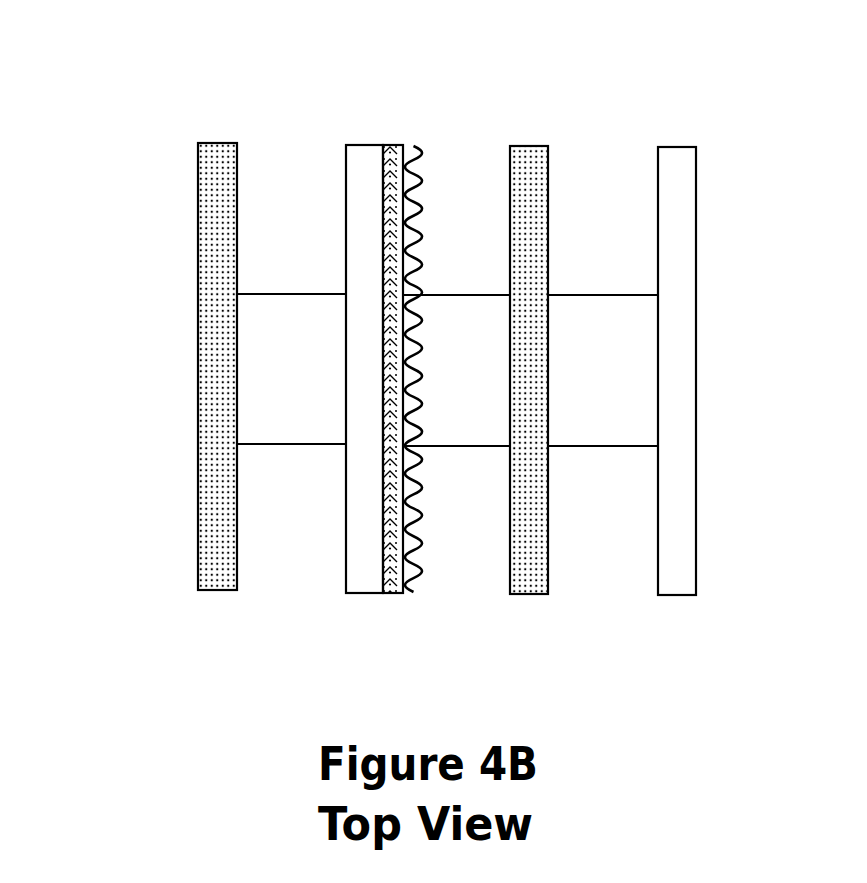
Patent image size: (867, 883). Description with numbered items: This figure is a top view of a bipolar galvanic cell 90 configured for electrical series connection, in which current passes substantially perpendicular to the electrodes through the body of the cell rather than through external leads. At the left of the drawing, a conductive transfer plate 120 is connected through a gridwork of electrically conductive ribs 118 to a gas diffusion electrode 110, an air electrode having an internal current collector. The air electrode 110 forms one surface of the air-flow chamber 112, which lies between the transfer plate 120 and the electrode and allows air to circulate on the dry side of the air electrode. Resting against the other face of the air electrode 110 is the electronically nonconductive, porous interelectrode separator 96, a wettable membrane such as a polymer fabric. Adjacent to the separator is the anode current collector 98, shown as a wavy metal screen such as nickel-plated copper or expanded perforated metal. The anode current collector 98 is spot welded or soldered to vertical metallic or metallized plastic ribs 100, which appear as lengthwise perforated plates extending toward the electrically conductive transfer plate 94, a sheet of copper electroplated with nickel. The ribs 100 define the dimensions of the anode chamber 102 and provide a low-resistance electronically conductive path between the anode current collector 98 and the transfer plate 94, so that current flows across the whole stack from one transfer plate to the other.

The galvanic cell 90 is at (152, 115).
The electrically conductive transfer plate 94 is at (534, 162).
The porous interelectrode separator 96 is at (390, 147).
The anode current collector 98 is at (419, 157).
The ribs 100 is at (485, 296).
The anode chamber 102 is at (483, 508).
The gas diffusion electrode 110 is at (364, 160).
The air-flow chamber 112 is at (310, 378).
The electrically conductive ribs 118 is at (318, 292).
The conductive transfer plate 120 is at (215, 577).